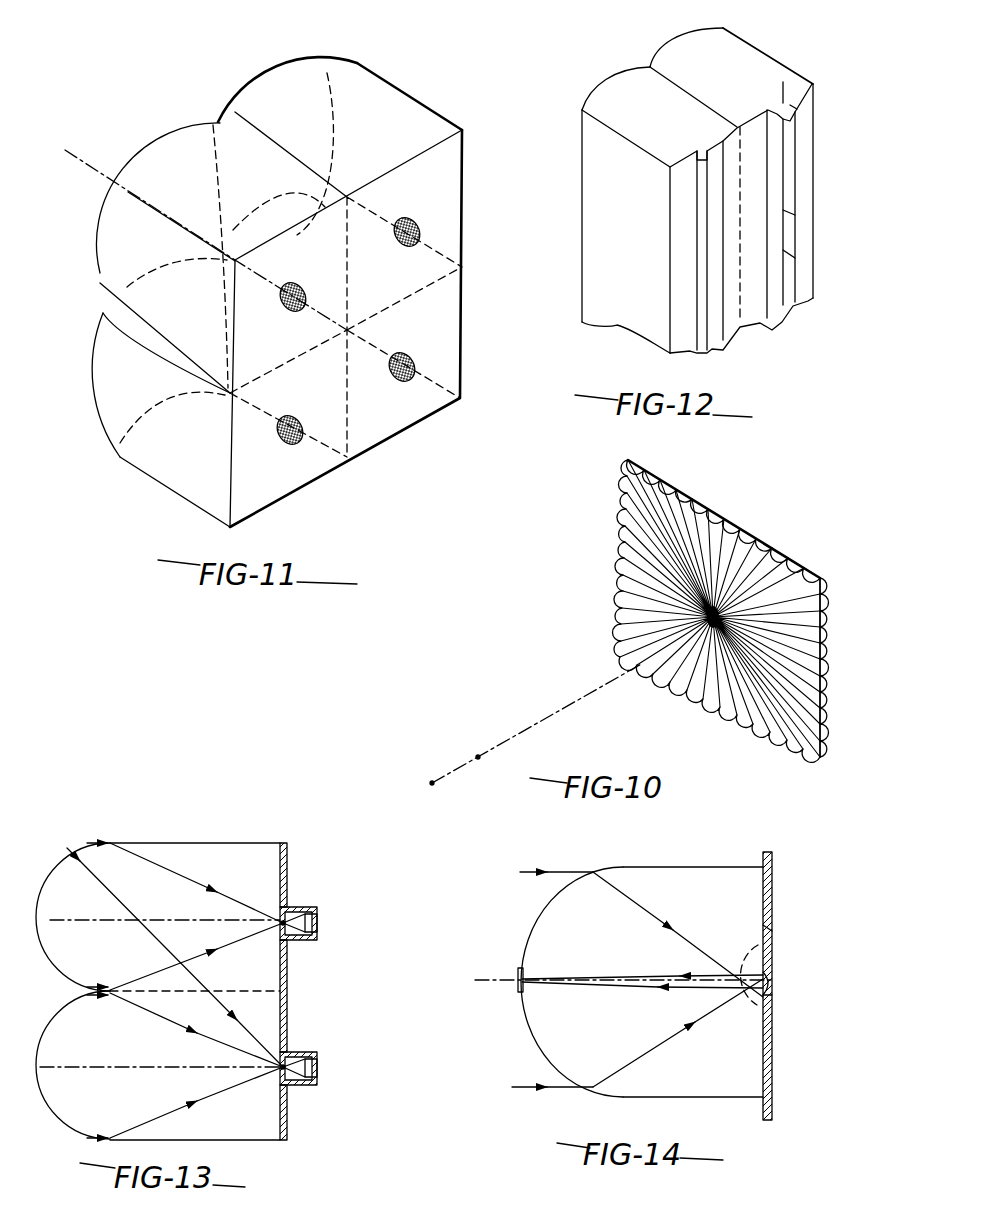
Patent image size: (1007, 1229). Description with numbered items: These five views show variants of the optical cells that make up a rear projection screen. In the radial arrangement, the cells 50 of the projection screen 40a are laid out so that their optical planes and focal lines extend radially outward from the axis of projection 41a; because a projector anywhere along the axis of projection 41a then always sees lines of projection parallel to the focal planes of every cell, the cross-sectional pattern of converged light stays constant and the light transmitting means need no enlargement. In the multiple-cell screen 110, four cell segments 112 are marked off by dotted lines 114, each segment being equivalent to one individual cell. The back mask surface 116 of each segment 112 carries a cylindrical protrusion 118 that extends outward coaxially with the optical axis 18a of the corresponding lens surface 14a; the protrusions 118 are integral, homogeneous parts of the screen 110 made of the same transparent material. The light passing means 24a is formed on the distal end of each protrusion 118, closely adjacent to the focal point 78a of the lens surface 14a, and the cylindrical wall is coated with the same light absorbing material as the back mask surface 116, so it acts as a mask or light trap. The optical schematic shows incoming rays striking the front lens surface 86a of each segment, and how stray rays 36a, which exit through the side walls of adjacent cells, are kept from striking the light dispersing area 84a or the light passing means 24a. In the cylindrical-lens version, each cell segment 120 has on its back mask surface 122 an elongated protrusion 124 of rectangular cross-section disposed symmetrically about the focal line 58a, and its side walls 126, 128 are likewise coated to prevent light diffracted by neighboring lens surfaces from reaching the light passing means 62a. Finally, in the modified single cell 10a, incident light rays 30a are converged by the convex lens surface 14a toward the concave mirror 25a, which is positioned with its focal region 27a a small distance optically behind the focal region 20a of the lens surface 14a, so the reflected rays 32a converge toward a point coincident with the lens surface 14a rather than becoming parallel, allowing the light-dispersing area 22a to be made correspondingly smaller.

In FIG. 11, the projection screen 110 is at (422, 130).
In FIG. 11, the lens surface 14a is at (163, 150).
In FIG. 14, the lens surface 14a is at (532, 937).
In FIG. 11, the back mask surface 116 is at (262, 367).
In FIG. 11, the optical axis 18a is at (92, 167).
In FIG. 14, the optical axis 18a is at (620, 975).
In FIG. 11, the cell segment 112 is at (445, 192).
In FIG. 11, the dotted lines 114 is at (430, 283).
In FIG. 11, the cylindrical protrusion 118 is at (280, 298).
In FIG. 13, the cylindrical protrusion 118 is at (307, 943).
In FIG. 11, the focal point 78a is at (300, 290).
In FIG. 13, the focal point 78a is at (288, 906).
In FIG. 11, the light passing means 24a is at (308, 300).
In FIG. 14, the light passing means 24a is at (770, 977).
In FIG. 11, the light dispersing area 84a is at (292, 312).
In FIG. 13, the light dispersing area 84a is at (317, 923).
In FIG. 12, the cell segment 120 is at (760, 62).
In FIG. 12, the back mask surface 122 is at (800, 152).
In FIG. 12, the side wall 126 is at (772, 328).
In FIG. 12, the focal line 58a is at (787, 90).
In FIG. 12, the side wall 128 is at (798, 103).
In FIG. 12, the elongated protrusion 124 is at (785, 217).
In FIG. 12, the light passing means 62a is at (788, 257).
In FIG. 10, the projection screen 40a is at (732, 708).
In FIG. 10, the optical cell 50 is at (620, 537).
In FIG. 10, the axis of projection 41a is at (503, 737).
In FIG. 13, the lens surface 86a is at (110, 843).
In FIG. 13, the light rays 36a is at (107, 893).
In FIG. 14, the housing wall 10a is at (727, 875).
In FIG. 14, the light-dispersing area 22a is at (518, 987).
In FIG. 14, the light ray 30a is at (557, 873).
In FIG. 14, the light rays 32a is at (640, 988).
In FIG. 14, the focal region 27a is at (750, 1000).
In FIG. 14, the focal region 20a is at (770, 930).
In FIG. 14, the concave mirror 25a is at (770, 993).